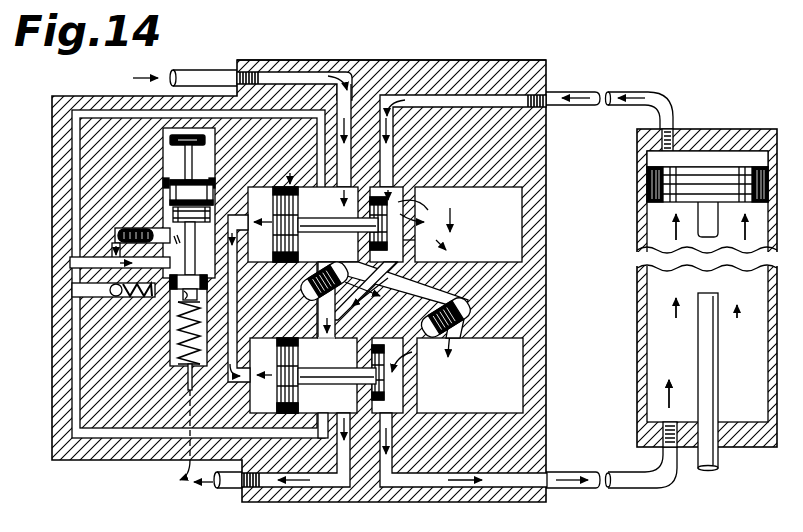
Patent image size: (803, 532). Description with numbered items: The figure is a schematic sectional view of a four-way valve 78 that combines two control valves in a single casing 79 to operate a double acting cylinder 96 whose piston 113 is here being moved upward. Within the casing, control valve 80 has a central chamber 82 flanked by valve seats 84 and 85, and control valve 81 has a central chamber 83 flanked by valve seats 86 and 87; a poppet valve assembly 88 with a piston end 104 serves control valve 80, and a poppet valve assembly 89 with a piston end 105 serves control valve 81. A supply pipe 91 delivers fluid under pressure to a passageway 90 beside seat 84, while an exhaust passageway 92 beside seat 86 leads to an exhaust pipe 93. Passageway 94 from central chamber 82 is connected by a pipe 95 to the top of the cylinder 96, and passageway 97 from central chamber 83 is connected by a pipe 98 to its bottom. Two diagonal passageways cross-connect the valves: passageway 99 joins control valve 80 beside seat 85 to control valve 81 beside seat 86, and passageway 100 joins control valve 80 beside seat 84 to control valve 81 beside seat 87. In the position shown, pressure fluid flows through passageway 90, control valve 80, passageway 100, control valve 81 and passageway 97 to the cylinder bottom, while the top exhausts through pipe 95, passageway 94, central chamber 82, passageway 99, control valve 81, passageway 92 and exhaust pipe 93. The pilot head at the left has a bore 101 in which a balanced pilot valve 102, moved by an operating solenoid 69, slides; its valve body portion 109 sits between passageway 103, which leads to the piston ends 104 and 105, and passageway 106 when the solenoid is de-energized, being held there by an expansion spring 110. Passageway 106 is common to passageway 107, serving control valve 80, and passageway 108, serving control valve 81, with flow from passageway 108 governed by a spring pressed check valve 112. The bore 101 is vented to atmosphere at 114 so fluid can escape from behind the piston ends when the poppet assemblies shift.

The operating solenoid 69 is at (170, 195).
The four-way valve 78 is at (519, 58).
The casing 79 is at (493, 59).
The control valve 80 is at (290, 184).
The control valve 81 is at (285, 416).
The central chamber 82 is at (412, 198).
The central chamber 83 is at (428, 405).
The valve seat 84 is at (410, 252).
The valve seat 85 is at (416, 212).
The valve seat 86 is at (366, 346).
The valve seat 87 is at (398, 372).
The poppet valve assembly 88 is at (279, 212).
The poppet valve assembly 89 is at (279, 362).
The passageway 90 is at (347, 88).
The supply pipe 91 is at (220, 74).
The exhaust passageway 92 is at (345, 462).
The exhaust pipe 93 is at (222, 495).
The passageway 94 is at (396, 124).
The pipe 95 is at (622, 92).
The double acting cylinder 96 is at (731, 128).
The passageway 97 is at (386, 462).
The pipe 98 is at (586, 494).
The passageway 99 is at (326, 336).
The passageway 100 is at (346, 268).
The bore 101 is at (193, 258).
The pilot valve 102 is at (240, 246).
The passageway 103 is at (330, 262).
The piston end 104 is at (300, 208).
The piston end 105 is at (280, 386).
The passageway 106 is at (140, 261).
The passageway 107 is at (118, 233).
The passageway 108 is at (112, 294).
The valve body portion 109 is at (180, 302).
The expansion spring 110 is at (178, 346).
The check valve 112 is at (110, 285).
The piston 113 is at (647, 190).
The vent 114 is at (188, 370).